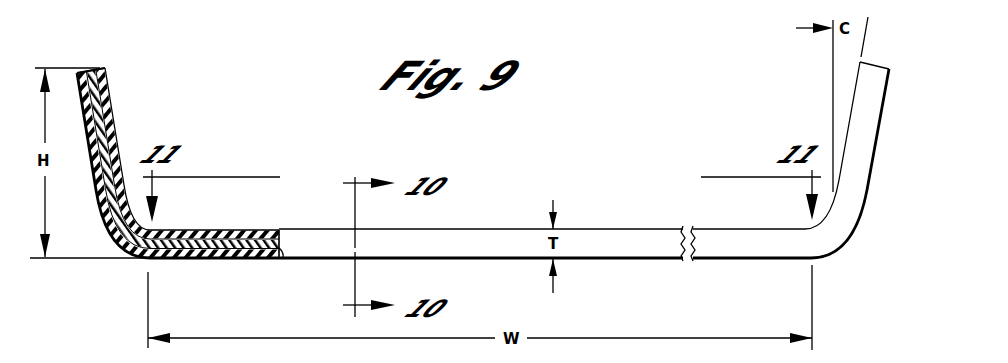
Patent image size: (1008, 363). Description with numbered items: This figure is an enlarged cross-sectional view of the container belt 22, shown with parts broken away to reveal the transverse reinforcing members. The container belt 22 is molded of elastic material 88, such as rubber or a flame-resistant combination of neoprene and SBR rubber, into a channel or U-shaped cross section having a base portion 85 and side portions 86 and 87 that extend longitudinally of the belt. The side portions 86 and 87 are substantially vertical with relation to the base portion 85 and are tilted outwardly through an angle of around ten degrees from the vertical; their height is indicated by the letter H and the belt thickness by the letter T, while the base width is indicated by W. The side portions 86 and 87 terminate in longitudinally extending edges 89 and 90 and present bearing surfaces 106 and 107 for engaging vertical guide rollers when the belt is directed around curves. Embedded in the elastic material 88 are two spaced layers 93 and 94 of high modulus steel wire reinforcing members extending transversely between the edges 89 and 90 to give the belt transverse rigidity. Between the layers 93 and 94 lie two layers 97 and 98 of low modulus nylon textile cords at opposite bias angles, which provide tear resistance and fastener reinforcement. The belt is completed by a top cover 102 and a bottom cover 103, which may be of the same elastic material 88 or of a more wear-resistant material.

The container belt 22 is at (597, 228).
The base portion 85 is at (505, 259).
The side portion 86 is at (113, 128).
The side portion 87 is at (880, 100).
The elastic material 88 is at (102, 95).
The longitudinally extending edge 89 is at (83, 68).
The longitudinally extending edge 90 is at (877, 66).
The layer of reinforcing members 93 is at (277, 232).
The layer of reinforcing members 94 is at (283, 259).
The layer of textile cords 97 is at (282, 240).
The layer of textile cords 98 is at (285, 250).
The top cover 102 is at (180, 232).
The bottom cover 103 is at (178, 260).
The bearing surface 106 is at (93, 172).
The bearing surface 107 is at (868, 185).